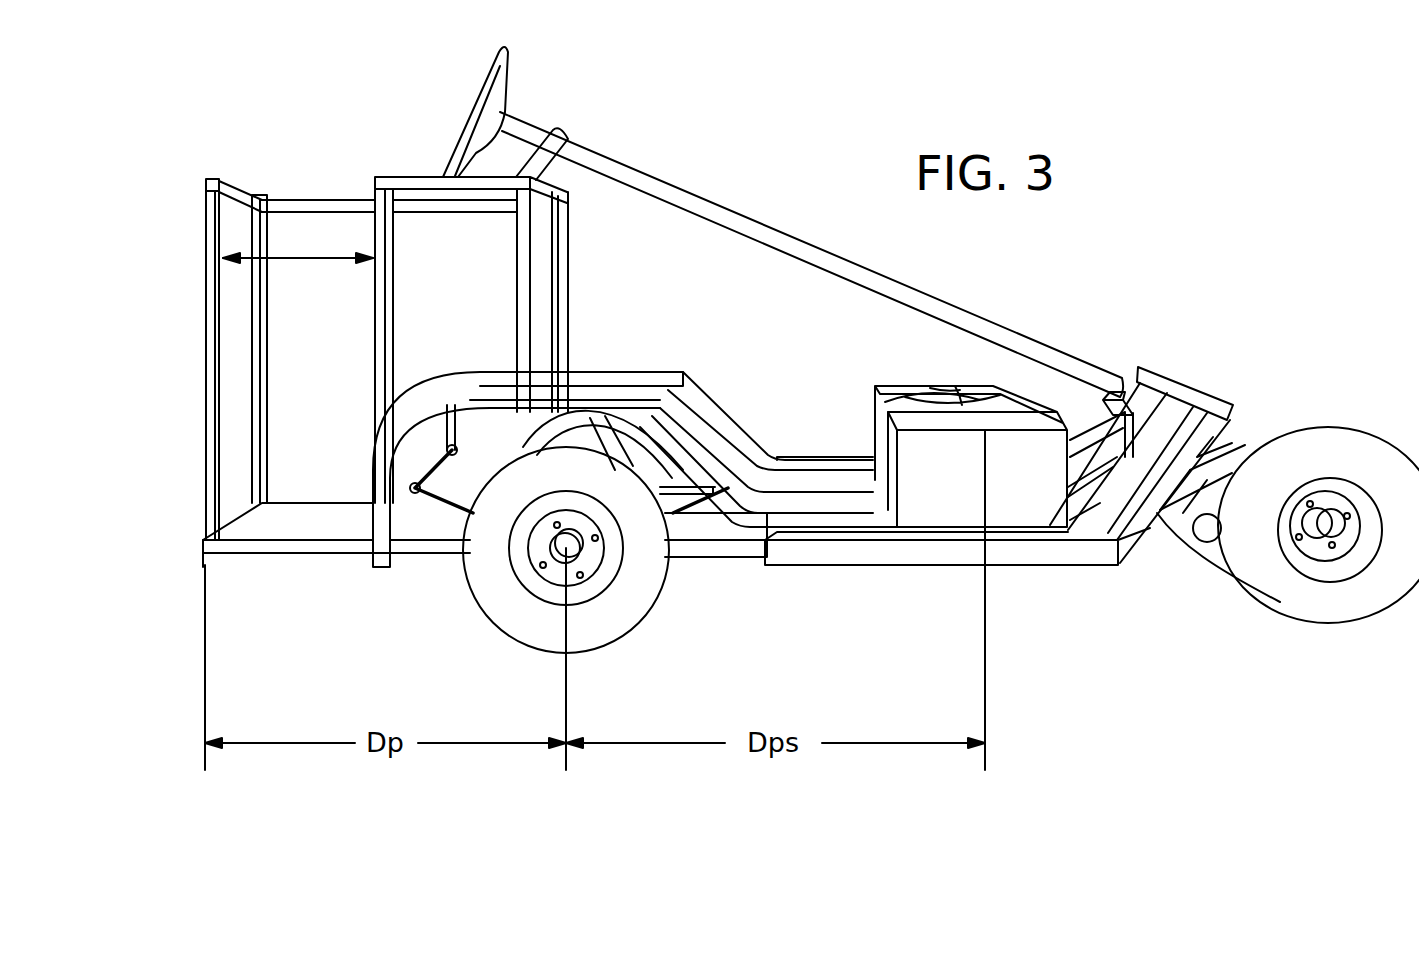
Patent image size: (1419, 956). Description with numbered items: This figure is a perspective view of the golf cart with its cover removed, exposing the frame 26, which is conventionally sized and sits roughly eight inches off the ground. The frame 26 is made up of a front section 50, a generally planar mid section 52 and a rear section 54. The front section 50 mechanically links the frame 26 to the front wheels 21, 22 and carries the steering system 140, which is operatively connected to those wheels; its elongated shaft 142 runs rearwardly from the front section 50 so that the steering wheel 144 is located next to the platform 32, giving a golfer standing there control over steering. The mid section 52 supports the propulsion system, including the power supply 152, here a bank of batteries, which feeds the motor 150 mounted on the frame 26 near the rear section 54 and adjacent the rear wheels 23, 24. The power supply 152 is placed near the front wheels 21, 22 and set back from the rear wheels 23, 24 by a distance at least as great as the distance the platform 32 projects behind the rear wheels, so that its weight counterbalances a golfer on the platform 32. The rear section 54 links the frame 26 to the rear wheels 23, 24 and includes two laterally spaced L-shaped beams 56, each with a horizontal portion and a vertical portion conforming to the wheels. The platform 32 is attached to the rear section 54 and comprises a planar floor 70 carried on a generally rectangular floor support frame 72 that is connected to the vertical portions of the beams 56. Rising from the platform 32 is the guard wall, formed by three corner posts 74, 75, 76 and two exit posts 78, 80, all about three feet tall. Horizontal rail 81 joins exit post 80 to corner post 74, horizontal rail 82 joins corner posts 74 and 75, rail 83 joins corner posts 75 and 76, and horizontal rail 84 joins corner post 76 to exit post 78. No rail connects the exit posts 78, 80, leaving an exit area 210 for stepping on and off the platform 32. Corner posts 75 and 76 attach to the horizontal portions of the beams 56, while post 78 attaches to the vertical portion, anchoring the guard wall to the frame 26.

The front wheel 21 is at (1210, 548).
The front wheel 22 is at (1278, 580).
The rear wheel 23 is at (638, 430).
The rear wheel 24 is at (583, 627).
The frame 26 is at (829, 432).
The platform 32 is at (238, 572).
The front section 50 is at (1156, 580).
The mid section 52 is at (887, 584).
The rear section 54 is at (472, 468).
The L-shaped beam 56 is at (407, 430).
The planar floor 70 is at (262, 522).
The floor support frame 72 is at (325, 553).
The corner post 74 is at (262, 390).
The corner post 75 is at (555, 295).
The corner post 76 is at (522, 356).
The exit post 78 is at (385, 398).
The exit post 80 is at (215, 433).
The horizontal rail 81 is at (232, 186).
The horizontal rail 82 is at (302, 200).
The rail 83 is at (543, 182).
The horizontal rail 84 is at (410, 190).
The steering system 140 is at (1140, 382).
The elongated shaft 142 is at (722, 217).
The steering wheel 144 is at (482, 70).
The motor 150 is at (700, 500).
The power supply 152 is at (1025, 505).
The exit area 210 is at (297, 260).